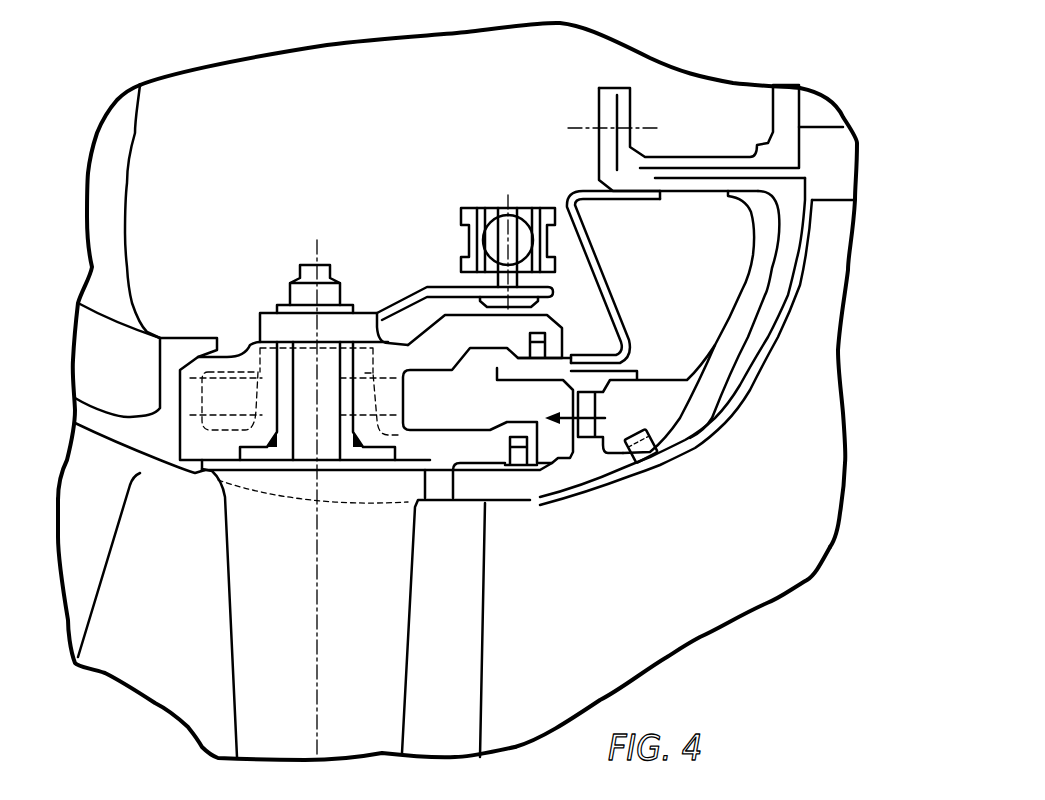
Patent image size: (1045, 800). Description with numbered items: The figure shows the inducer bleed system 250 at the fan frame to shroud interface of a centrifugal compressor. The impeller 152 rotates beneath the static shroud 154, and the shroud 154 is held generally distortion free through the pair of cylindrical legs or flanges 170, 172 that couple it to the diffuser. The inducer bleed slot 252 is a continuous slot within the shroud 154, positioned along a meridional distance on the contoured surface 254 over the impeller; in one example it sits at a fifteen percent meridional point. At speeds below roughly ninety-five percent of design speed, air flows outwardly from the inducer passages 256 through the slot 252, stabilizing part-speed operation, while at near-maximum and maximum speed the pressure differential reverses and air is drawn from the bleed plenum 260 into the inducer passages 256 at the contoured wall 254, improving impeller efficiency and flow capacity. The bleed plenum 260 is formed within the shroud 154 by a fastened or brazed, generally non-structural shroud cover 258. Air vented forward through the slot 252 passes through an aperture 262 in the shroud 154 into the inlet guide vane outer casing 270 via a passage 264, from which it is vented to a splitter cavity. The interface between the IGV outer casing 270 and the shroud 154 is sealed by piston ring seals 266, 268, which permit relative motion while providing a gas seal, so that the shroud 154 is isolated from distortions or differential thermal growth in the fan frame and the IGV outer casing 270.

The impeller 152 is at (662, 643).
The shroud 154 is at (777, 297).
The flange 170 is at (715, 193).
The flange 172 is at (688, 157).
The inducer bleed system 250 is at (782, 54).
The inducer bleed slot 252 is at (650, 465).
The contoured surface 254 is at (723, 402).
The inducer passages 256 is at (802, 492).
The shroud cover 258 is at (572, 203).
The inducer bleed plenum 260 is at (698, 258).
The aperture 262 is at (587, 430).
The passage 264 is at (228, 412).
The piston ring seal 266 is at (499, 465).
The piston ring seal 268 is at (513, 357).
The inlet guide vane outer casing 270 is at (441, 340).